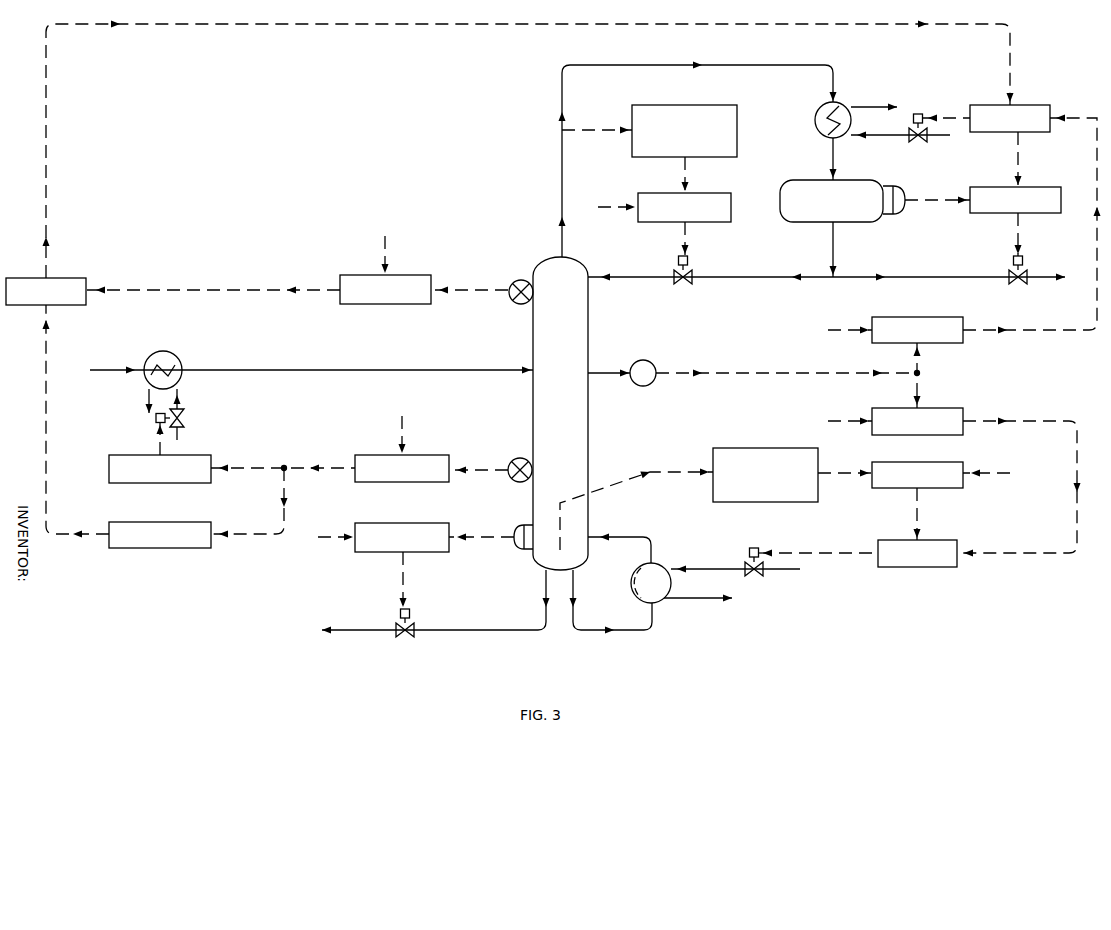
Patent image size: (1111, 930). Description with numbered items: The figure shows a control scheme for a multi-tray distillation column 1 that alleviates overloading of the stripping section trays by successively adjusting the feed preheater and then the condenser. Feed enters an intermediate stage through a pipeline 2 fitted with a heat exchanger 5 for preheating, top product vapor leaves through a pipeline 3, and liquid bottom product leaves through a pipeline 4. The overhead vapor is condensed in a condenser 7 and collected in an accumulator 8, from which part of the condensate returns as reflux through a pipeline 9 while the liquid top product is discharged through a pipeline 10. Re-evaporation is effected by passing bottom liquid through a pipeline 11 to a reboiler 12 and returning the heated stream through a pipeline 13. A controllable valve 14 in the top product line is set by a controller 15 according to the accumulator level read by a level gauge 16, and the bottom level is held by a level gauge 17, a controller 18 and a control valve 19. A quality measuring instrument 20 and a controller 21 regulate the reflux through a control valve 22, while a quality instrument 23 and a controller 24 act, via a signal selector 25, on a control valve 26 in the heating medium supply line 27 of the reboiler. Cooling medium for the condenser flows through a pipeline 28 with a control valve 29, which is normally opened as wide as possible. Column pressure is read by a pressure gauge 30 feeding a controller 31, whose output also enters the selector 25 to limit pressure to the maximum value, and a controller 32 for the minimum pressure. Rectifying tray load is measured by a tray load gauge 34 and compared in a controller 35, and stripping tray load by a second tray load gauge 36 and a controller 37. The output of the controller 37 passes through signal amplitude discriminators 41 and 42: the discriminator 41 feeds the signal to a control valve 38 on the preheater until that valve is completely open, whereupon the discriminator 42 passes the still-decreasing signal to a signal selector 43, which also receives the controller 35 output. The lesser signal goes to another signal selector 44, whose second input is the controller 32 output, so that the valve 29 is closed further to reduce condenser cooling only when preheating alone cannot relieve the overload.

The distillation column 1 is at (566, 424).
The feed pipeline 2 is at (289, 370).
The top product discharge pipeline 3 is at (597, 66).
The bottom product pipeline 4 is at (441, 630).
The heat exchanger 5 is at (151, 364).
The condenser 7 is at (819, 110).
The accumulator 8 is at (812, 180).
The reflux pipeline 9 is at (728, 277).
The discharge pipeline 10 is at (938, 277).
The reboiler feed pipeline 11 is at (595, 630).
The reboiler 12 is at (636, 575).
The reboiler return pipeline 13 is at (613, 537).
The controllable valve 14 is at (1016, 287).
The controller 15 is at (1028, 187).
The level gauge 16 is at (906, 197).
The level gauge 17 is at (516, 530).
The controller 18 is at (408, 523).
The control valve 19 is at (404, 640).
The quality measuring instrument 20 is at (738, 136).
The controller 21 is at (700, 193).
The control valve 22 is at (681, 287).
The quality instrument 23 is at (746, 448).
The controller 24 is at (894, 488).
The signal selector 25 is at (929, 540).
The control valve 26 is at (753, 579).
The heating medium supply line 27 is at (695, 569).
The cooling medium pipeline 28 is at (870, 135).
The control valve 29 is at (916, 145).
The pressure gauge 30 is at (643, 386).
The controller 31 is at (936, 408).
The controller 32 is at (940, 343).
The tray load gauge 34 is at (524, 281).
The controller 35 is at (368, 275).
The second tray load gauge 36 is at (523, 459).
The controller 37 is at (386, 455).
The control valve 38 is at (186, 425).
The signal amplitude discriminator 41 is at (139, 455).
The signal amplitude discriminator 42 is at (140, 522).
The signal selector 43 is at (58, 278).
The signal selector 44 is at (1023, 105).